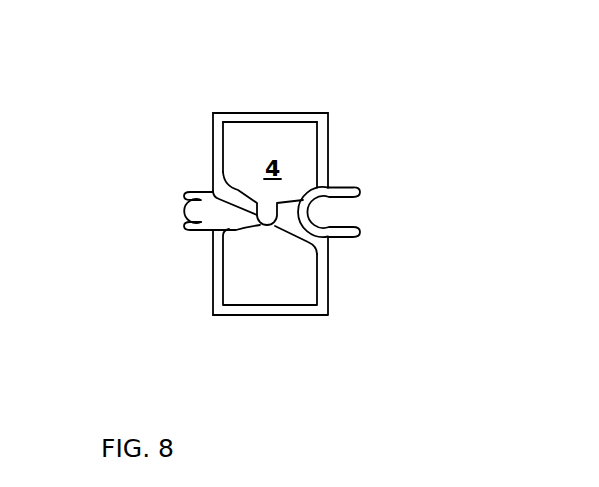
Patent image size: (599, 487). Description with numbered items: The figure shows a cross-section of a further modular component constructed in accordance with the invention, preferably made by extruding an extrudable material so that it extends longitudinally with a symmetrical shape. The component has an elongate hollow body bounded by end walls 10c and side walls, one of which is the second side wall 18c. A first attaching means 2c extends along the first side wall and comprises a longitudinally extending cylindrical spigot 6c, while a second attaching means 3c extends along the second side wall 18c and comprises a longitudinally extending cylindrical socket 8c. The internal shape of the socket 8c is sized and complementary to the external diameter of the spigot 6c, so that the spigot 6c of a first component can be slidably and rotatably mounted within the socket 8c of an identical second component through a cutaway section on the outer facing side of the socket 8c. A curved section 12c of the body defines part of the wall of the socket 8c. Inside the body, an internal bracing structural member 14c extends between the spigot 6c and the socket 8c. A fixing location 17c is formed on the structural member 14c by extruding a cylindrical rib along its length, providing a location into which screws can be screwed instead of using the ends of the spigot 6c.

The end wall 10c is at (293, 112).
The fixing location 17c is at (210, 148).
The second side wall 18c is at (329, 143).
The first attaching means 2c is at (191, 197).
The second attaching means 3c is at (358, 190).
The spigot 6c is at (204, 231).
The socket 8c is at (345, 213).
The curved section 12c is at (222, 239).
The structural member 14c is at (270, 226).